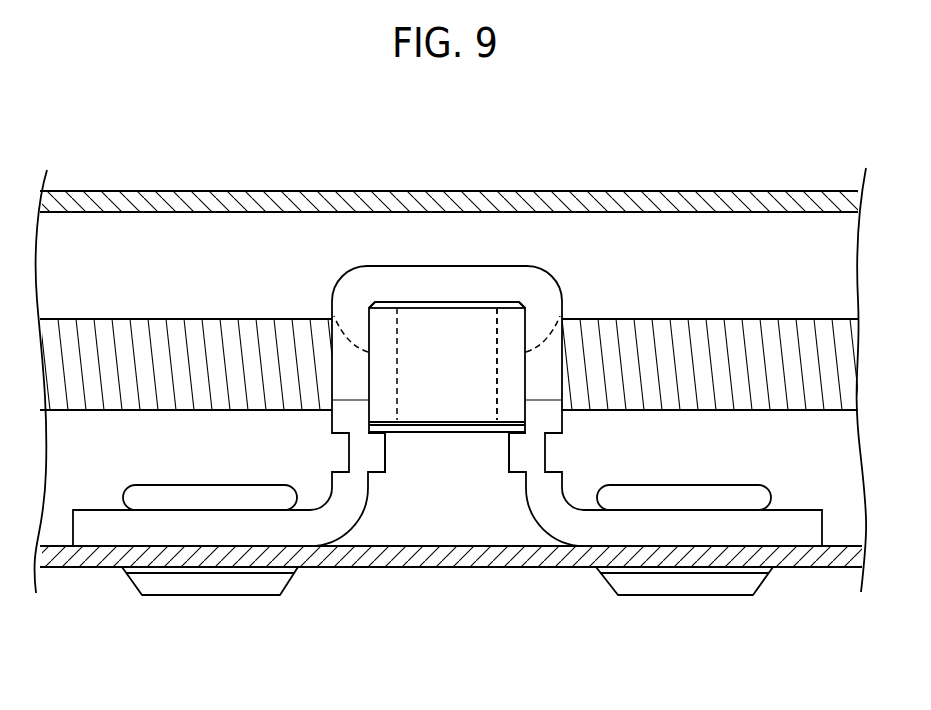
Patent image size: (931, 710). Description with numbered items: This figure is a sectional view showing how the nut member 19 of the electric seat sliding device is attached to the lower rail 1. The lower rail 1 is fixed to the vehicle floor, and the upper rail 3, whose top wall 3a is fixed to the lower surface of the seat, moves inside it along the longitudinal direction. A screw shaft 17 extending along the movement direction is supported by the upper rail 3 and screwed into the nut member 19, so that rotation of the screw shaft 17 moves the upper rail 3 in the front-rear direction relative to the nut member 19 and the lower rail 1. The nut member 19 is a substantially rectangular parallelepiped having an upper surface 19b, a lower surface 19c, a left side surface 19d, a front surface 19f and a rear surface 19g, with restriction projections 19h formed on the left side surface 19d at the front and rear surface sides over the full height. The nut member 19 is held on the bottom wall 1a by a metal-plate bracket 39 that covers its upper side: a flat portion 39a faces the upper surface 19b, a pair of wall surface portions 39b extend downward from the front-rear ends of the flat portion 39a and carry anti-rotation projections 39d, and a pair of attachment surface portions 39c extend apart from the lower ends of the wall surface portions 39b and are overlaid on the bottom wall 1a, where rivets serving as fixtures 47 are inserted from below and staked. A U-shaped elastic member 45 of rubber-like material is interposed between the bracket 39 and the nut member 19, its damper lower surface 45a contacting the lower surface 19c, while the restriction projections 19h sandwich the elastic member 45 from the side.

The lower rail 1 is at (828, 568).
The bottom wall 1a is at (795, 569).
The upper rail 3 is at (634, 191).
The top wall 3a is at (767, 200).
The screw shaft 17 is at (182, 328).
The nut member 19 is at (453, 304).
The upper surface 19b is at (488, 327).
The lower surface 19c is at (453, 423).
The left side surface 19d is at (513, 331).
The front surface 19f is at (334, 316).
The rear surface 19g is at (560, 316).
The restriction projections 19h is at (541, 307).
The bracket 39 is at (392, 265).
The flat portion 39a is at (431, 272).
The wall surface portions 39b is at (564, 380).
The attachment surface portions 39c is at (796, 522).
The anti-rotation projection 39d is at (517, 451).
The elastic member 45 is at (423, 431).
The damper lower surface 45a is at (483, 426).
The fixture 47 is at (683, 586).